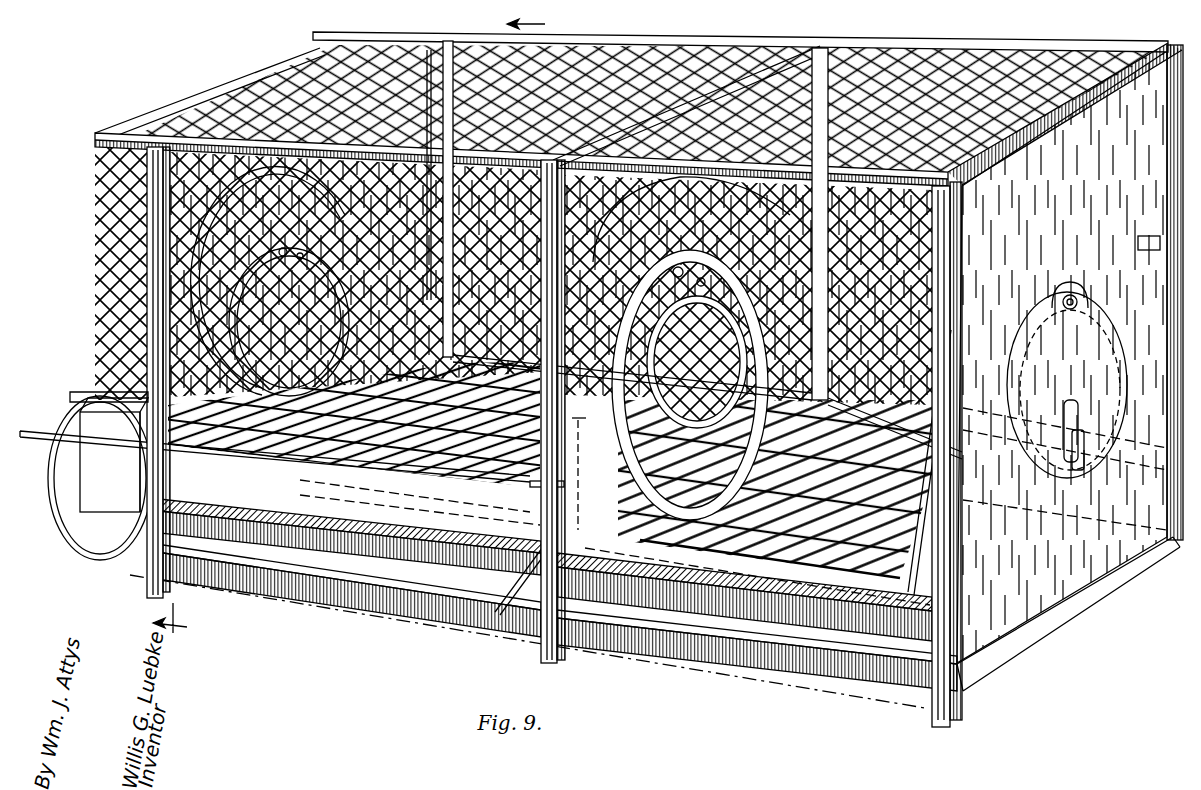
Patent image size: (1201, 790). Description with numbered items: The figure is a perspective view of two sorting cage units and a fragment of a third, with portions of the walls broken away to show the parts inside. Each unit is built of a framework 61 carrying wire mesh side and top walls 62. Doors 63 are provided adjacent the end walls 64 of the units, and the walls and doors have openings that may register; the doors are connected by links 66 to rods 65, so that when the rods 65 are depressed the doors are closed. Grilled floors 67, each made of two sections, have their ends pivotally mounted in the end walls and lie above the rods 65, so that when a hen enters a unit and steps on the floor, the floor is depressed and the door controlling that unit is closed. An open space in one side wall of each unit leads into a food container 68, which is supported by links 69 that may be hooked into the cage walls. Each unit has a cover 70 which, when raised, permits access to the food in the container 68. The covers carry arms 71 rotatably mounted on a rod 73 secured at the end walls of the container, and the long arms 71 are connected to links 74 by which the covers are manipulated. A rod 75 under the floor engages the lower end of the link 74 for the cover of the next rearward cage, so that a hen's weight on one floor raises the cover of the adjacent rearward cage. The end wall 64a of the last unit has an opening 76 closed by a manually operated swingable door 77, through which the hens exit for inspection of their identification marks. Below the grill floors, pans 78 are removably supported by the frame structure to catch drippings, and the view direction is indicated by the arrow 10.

The viewing direction arrow 10 is at (361, 333).
The framework 61 is at (818, 45).
The wire mesh side and top walls 62 is at (965, 68).
The doors 63 is at (232, 200).
The end walls 64 is at (215, 452).
The end wall of the last cage unit 64a is at (1062, 357).
The rods 65 is at (332, 455).
The links 66 is at (236, 393).
The grilled floors 67 is at (430, 385).
The container 68 is at (78, 398).
The links 69 is at (948, 380).
The cover 70 is at (380, 560).
The arms 71 is at (505, 595).
The rod 73 is at (292, 460).
The links 74 is at (590, 440).
The rod 75 is at (275, 540).
The opening 76 is at (1105, 355).
The swingable door 77 is at (1090, 318).
The pans 78 is at (450, 612).